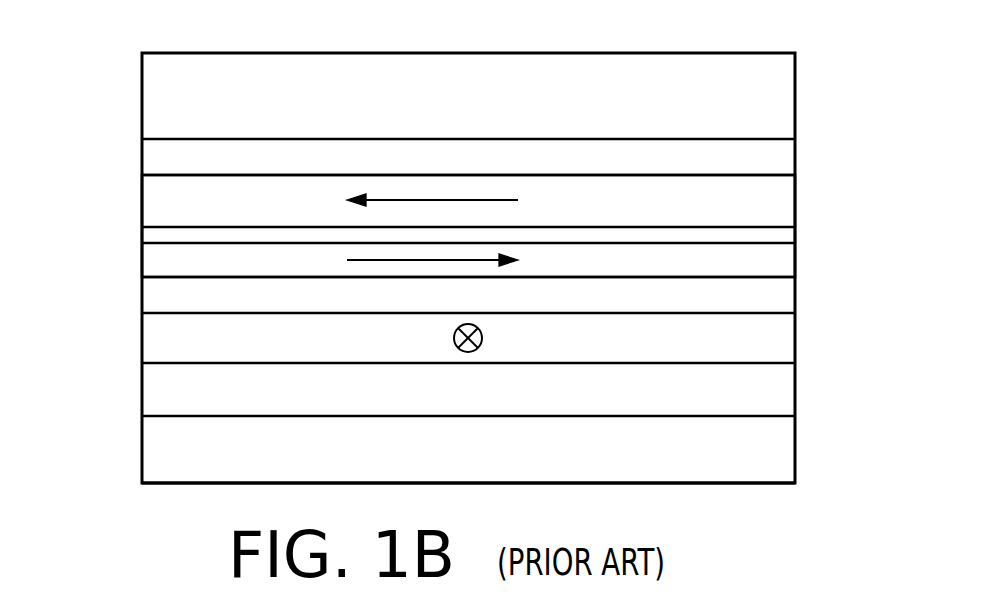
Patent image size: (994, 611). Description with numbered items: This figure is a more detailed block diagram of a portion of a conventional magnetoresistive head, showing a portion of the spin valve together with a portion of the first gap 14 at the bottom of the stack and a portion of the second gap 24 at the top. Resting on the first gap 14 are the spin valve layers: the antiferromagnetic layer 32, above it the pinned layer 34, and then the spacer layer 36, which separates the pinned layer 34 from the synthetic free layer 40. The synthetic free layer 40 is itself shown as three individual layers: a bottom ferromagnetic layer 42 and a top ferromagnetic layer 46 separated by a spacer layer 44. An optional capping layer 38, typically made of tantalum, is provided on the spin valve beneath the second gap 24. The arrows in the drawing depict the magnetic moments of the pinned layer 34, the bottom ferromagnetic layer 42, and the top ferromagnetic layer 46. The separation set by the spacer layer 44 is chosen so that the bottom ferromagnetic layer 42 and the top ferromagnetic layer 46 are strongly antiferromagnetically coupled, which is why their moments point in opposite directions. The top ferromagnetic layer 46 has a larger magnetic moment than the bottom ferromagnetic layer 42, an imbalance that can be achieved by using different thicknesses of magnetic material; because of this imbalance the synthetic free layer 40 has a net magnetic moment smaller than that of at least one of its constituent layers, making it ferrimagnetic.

The first gap 14 is at (795, 457).
The second gap 24 is at (795, 92).
The antiferromagnetic layer 32 is at (795, 390).
The pinned layer 34 is at (142, 340).
The spacer layer 36 is at (795, 292).
The capping layer 38 is at (142, 153).
The synthetic free layer 40 is at (128, 176).
The bottom ferromagnetic layer 42 is at (795, 260).
The spacer layer 44 is at (795, 231).
The top ferromagnetic layer 46 is at (795, 191).